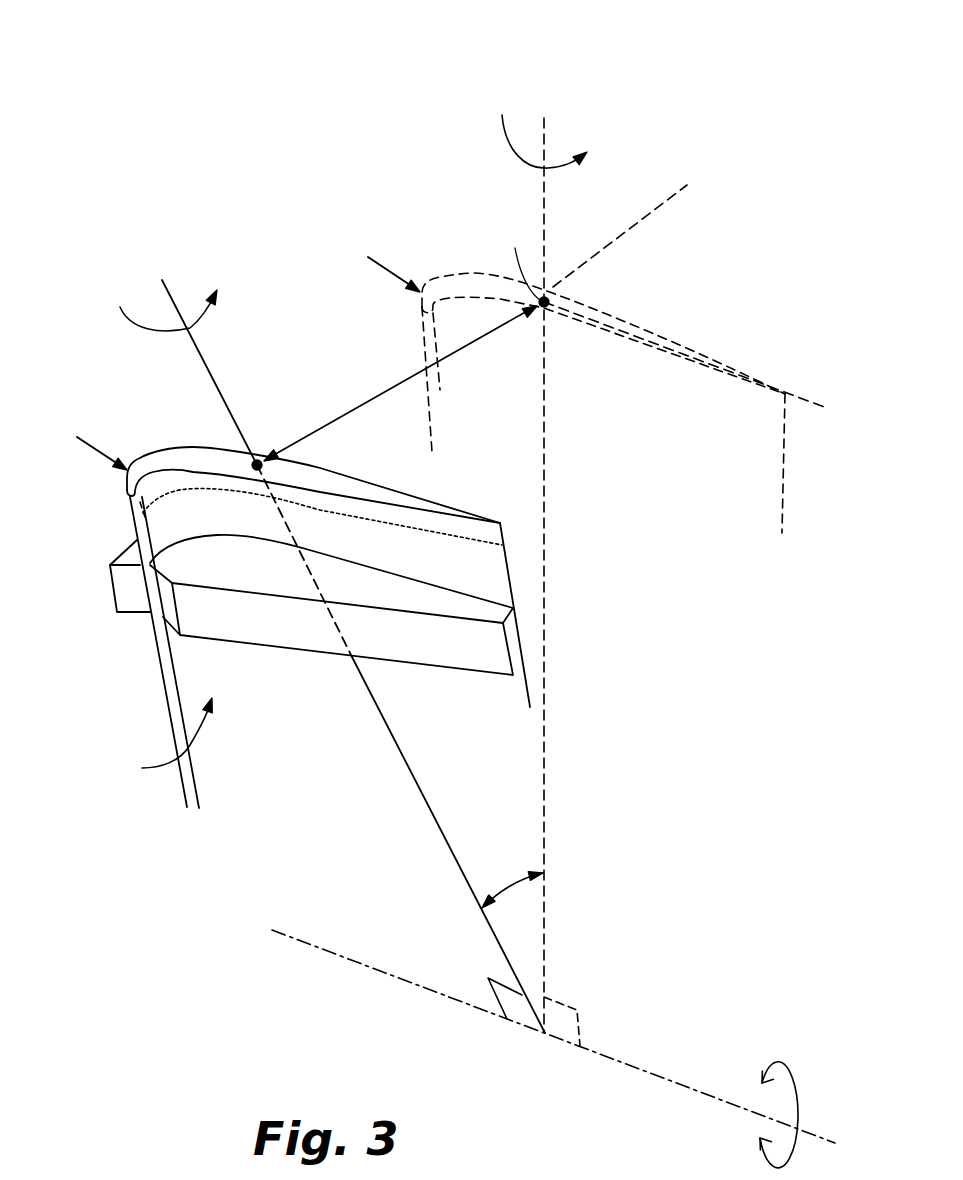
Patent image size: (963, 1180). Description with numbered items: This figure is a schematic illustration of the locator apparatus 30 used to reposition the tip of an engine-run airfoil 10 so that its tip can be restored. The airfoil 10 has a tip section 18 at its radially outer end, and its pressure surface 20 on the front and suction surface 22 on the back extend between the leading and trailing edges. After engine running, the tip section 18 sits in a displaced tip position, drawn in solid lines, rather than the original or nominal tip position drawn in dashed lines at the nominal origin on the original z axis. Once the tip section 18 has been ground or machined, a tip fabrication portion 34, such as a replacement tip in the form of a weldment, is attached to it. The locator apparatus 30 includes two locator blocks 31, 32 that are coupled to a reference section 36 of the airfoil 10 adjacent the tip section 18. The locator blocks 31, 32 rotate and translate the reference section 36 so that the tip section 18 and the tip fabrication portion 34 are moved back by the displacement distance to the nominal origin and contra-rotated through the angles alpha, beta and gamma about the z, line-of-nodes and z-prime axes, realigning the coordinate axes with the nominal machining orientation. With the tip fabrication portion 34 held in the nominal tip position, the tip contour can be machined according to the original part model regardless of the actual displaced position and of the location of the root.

The locator apparatus 30 is at (96, 101).
The airfoil 10 is at (353, 762).
The tip section 18 is at (177, 458).
The tip fabrication portion 34 is at (130, 505).
The reference section 36 is at (463, 557).
The locator block 31 is at (255, 633).
The locator block 32 is at (118, 588).
The suction surface 22 is at (143, 665).
The pressure surface 20 is at (162, 740).